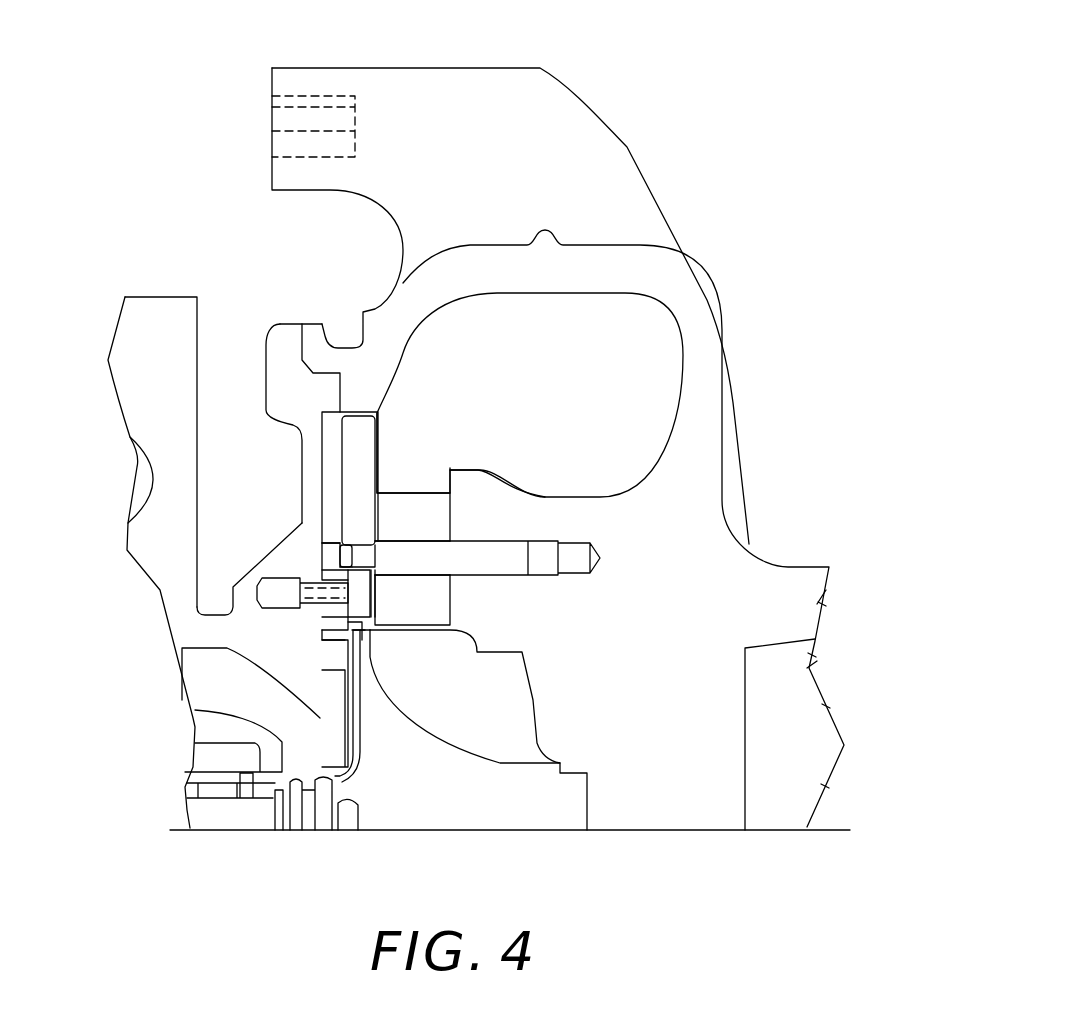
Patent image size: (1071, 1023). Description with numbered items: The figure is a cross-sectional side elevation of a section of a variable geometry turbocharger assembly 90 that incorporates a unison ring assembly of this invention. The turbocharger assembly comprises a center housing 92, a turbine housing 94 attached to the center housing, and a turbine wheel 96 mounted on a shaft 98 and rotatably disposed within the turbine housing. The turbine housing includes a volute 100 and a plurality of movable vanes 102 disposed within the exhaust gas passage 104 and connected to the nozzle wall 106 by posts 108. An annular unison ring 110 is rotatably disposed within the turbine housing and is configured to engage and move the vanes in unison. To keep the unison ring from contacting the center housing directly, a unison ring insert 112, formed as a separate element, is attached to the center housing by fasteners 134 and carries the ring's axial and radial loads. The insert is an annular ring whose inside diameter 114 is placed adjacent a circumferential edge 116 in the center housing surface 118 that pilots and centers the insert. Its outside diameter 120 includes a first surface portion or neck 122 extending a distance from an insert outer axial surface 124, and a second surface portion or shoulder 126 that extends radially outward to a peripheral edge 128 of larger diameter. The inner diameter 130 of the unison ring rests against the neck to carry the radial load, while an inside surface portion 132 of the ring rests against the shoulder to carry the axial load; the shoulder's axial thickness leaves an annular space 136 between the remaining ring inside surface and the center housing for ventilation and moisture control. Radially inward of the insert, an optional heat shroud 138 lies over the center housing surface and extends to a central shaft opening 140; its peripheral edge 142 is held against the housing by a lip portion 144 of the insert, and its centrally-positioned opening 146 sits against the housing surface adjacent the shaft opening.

The variable geometry turbocharger assembly 90 is at (713, 147).
The center housing 92 is at (282, 352).
The turbine housing 94 is at (706, 404).
The turbine wheel 96 is at (543, 785).
The shaft 98 is at (225, 817).
The volute 100 is at (610, 376).
The movable vanes 102 is at (437, 498).
The exhaust gas passage 104 is at (412, 453).
The nozzle wall 106 is at (450, 474).
The posts 108 is at (497, 565).
The unison ring 110 is at (356, 433).
The unison ring insert 112 is at (330, 574).
The inside diameter 114 is at (358, 628).
The circumferential edge 116 is at (340, 620).
The center housing surface 118 is at (343, 727).
The outside diameter 120 is at (349, 557).
The first surface portion 122 is at (375, 537).
The insert outer axial surface 124 is at (380, 572).
The second surface portion 126 is at (342, 512).
The peripheral edge 128 is at (335, 545).
The inner diameter 130 is at (350, 567).
The inside surface portion 132 is at (330, 572).
The fasteners 134 is at (360, 603).
The annular space 136 is at (328, 448).
The heat shroud 138 is at (353, 680).
The central shaft opening 140 is at (335, 778).
The peripheral edge 142 is at (360, 640).
The portion of the insert 144 is at (360, 645).
The centrally-positioned opening 146 is at (345, 768).